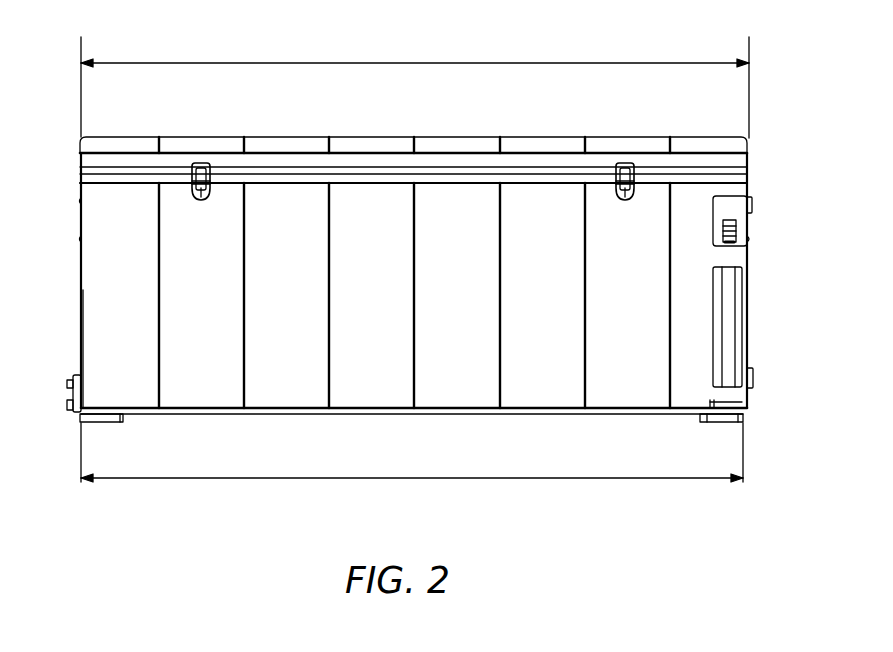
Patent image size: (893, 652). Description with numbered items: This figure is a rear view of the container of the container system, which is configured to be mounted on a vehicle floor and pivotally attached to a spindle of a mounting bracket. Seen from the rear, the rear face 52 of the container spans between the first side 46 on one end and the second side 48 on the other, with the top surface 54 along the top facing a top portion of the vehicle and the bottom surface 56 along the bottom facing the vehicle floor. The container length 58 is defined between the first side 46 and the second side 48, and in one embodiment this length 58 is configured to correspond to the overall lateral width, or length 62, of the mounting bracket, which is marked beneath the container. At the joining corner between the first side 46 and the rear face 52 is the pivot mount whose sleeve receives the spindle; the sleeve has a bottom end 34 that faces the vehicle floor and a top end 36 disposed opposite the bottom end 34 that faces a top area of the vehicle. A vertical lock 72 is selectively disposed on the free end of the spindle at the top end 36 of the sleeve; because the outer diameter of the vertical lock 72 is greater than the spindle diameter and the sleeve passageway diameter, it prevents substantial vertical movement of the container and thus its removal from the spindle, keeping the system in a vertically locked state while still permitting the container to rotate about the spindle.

The container length 58 is at (423, 62).
The top surface 54 is at (282, 136).
The rear face 52 is at (383, 306).
The bottom surface 56 is at (233, 410).
The second side 48 is at (81, 285).
The first side 46 is at (748, 313).
The top end 36 is at (741, 246).
The vertical lock 72 is at (737, 222).
The bottom end 34 is at (716, 402).
The length of the mounting bracket 62 is at (423, 479).